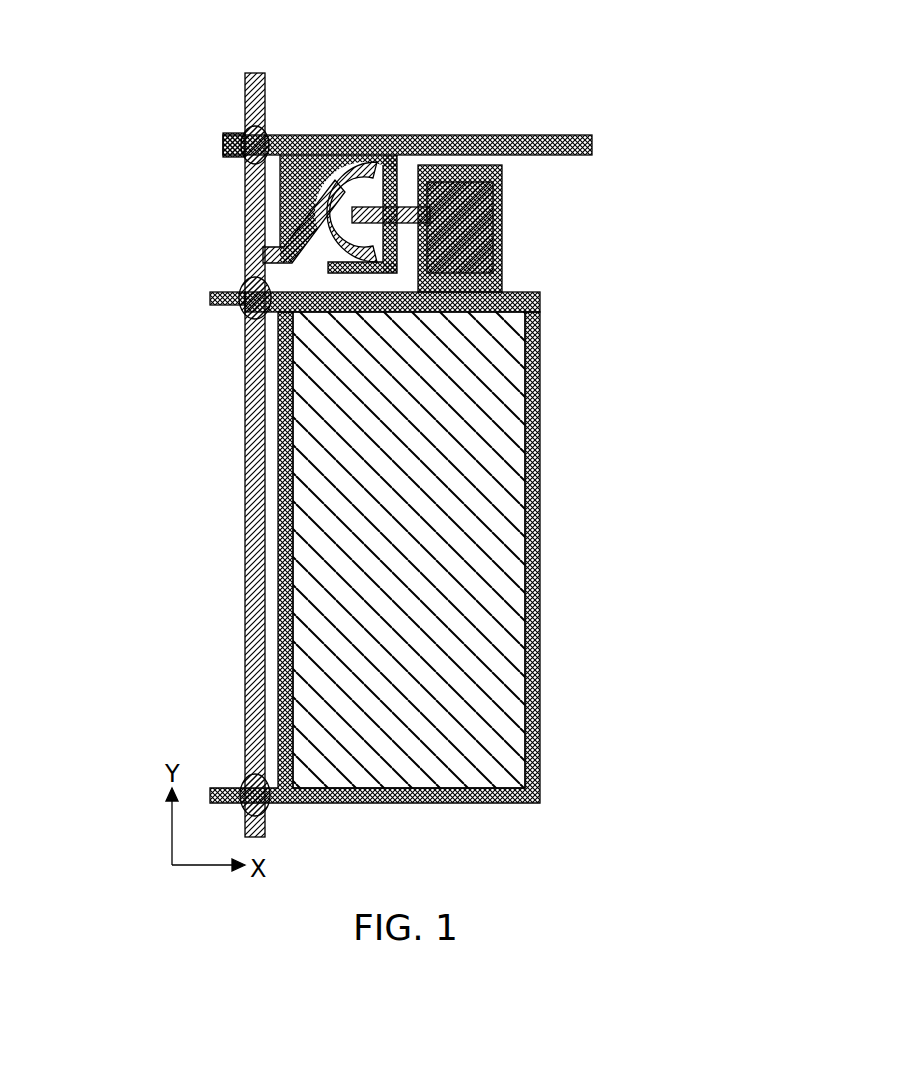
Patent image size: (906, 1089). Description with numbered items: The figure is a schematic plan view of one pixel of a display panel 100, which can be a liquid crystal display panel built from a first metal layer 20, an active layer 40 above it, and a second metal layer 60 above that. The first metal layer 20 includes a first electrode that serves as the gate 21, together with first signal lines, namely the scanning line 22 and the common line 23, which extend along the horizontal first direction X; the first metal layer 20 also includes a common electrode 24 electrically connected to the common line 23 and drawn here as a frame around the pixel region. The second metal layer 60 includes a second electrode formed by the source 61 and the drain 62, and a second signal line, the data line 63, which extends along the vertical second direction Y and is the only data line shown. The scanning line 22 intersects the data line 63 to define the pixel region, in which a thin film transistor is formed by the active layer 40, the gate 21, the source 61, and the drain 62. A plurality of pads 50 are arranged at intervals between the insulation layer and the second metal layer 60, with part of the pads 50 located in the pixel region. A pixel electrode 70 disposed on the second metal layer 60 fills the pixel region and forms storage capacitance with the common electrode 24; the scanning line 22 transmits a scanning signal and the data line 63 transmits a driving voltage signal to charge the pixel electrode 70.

The display panel 100 is at (655, 150).
The first metal layer 20 is at (133, 393).
The gate 21 is at (307, 136).
The scanning line 22 is at (540, 135).
The common line 23 is at (515, 288).
The common electrode 24 is at (538, 372).
The active layer 40 is at (347, 160).
The pads 50 is at (225, 138).
The second metal layer 60 is at (133, 610).
The source 61 is at (293, 258).
The drain 62 is at (500, 257).
The data line 63 is at (265, 72).
The pixel electrode 70 is at (512, 485).